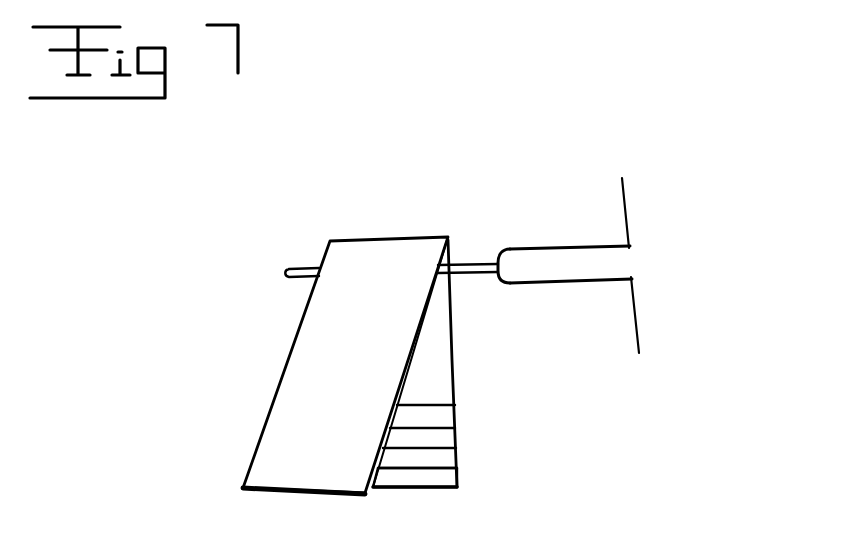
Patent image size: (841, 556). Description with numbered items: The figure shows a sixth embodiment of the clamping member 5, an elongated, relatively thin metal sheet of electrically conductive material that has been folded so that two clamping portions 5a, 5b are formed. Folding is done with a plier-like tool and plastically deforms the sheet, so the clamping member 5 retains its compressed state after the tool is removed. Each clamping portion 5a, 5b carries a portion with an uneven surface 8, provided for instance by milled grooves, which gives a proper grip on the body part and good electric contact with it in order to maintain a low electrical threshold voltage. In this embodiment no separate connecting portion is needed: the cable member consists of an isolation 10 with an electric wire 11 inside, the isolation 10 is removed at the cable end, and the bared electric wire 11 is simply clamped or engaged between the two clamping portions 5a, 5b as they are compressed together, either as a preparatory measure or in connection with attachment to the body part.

The clamping member 5 is at (217, 326).
The clamping portion 5a is at (272, 432).
The clamping portion 5b is at (447, 438).
The uneven surface 8 is at (412, 473).
The isolation 10 is at (566, 262).
The electric wire 11 is at (475, 253).